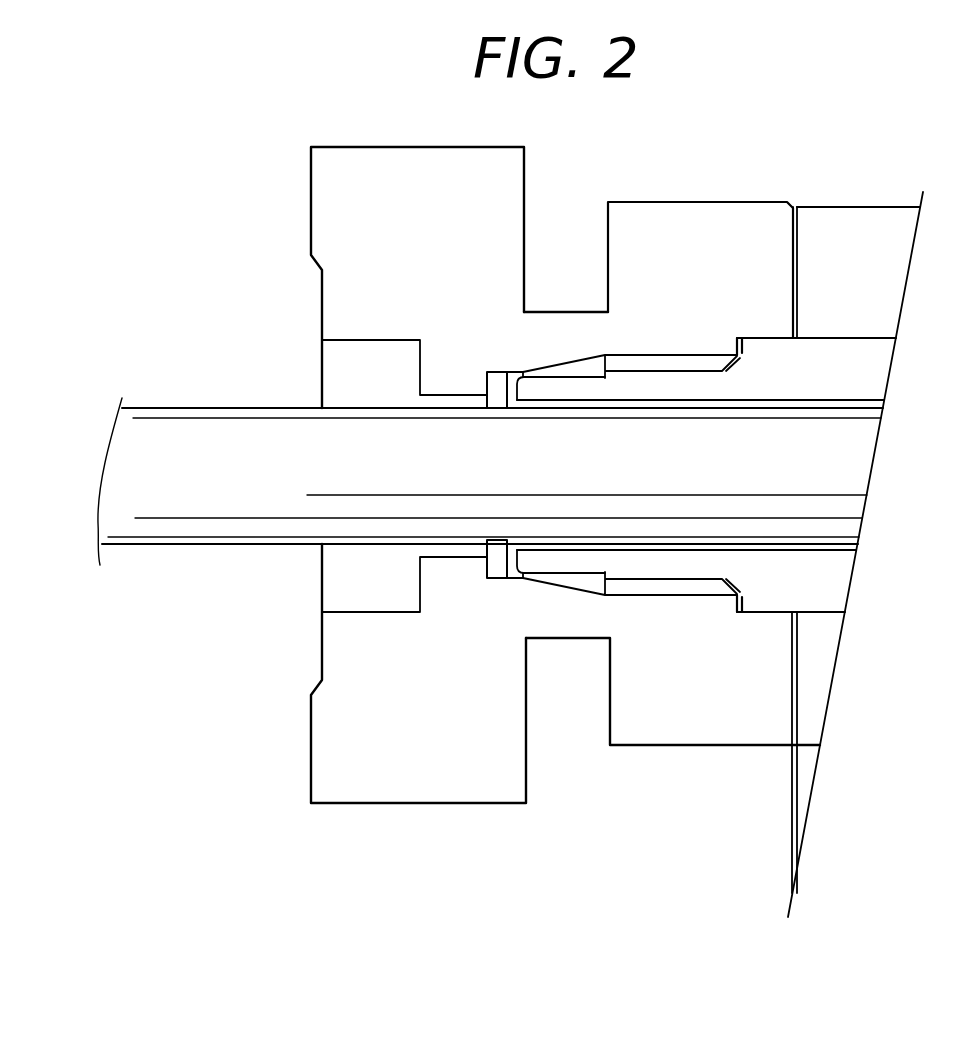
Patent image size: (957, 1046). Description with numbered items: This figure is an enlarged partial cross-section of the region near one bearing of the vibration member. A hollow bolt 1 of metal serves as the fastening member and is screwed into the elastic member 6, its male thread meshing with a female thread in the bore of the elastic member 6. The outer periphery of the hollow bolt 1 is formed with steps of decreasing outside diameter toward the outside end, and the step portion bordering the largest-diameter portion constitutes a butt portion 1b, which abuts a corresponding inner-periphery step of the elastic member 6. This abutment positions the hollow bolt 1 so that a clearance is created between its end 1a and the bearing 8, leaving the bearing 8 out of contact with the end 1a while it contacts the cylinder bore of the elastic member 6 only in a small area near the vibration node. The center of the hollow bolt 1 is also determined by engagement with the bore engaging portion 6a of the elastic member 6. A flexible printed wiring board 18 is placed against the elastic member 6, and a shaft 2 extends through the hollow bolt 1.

The hollow bolt 1 is at (850, 345).
The end of the hollow bolt 1a is at (513, 560).
The butt portion 1b is at (733, 612).
The shaft 2 is at (193, 528).
The elastic member 6 is at (378, 796).
The bore engaging portion 6a is at (767, 607).
The bearing 8 is at (497, 376).
The flexible printed wiring board 18 is at (790, 828).